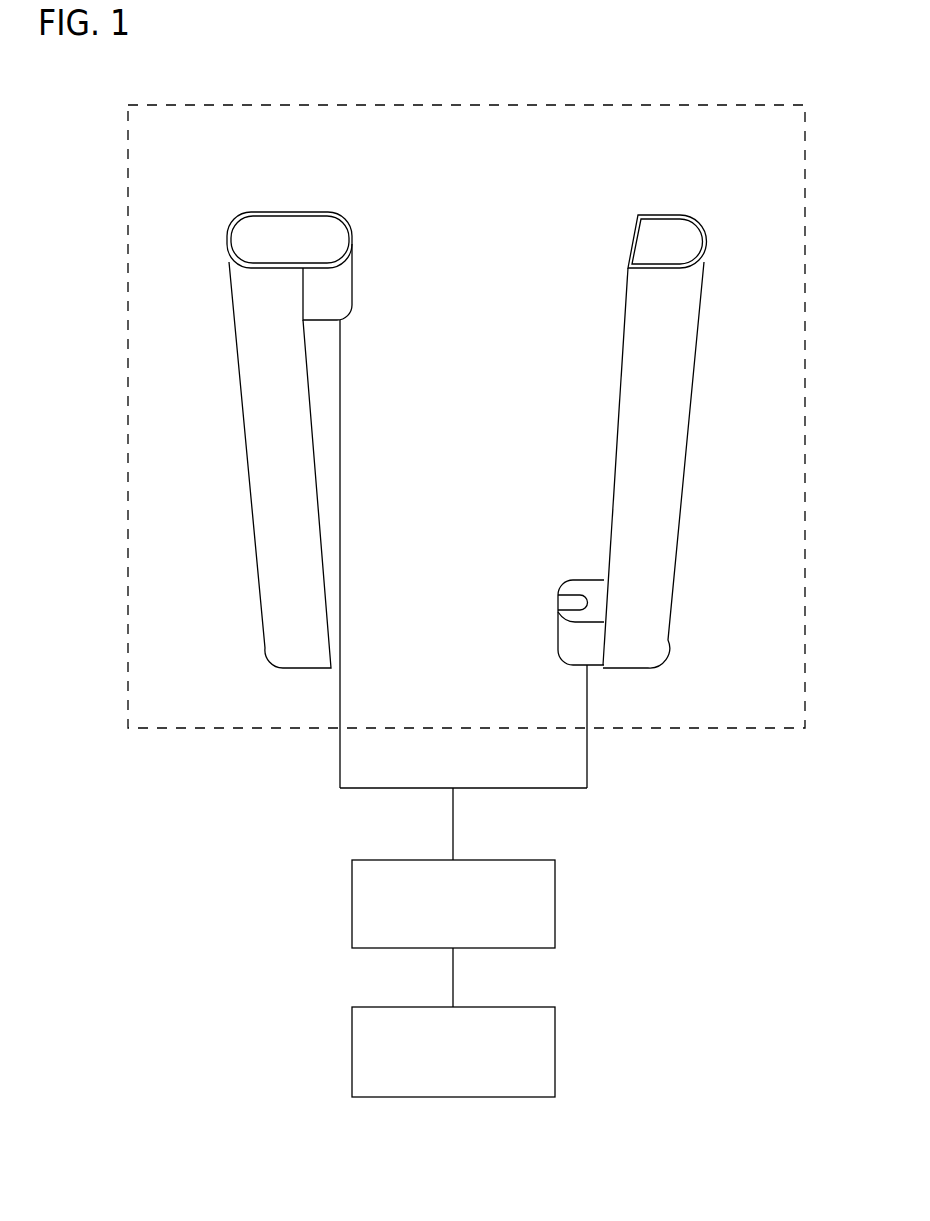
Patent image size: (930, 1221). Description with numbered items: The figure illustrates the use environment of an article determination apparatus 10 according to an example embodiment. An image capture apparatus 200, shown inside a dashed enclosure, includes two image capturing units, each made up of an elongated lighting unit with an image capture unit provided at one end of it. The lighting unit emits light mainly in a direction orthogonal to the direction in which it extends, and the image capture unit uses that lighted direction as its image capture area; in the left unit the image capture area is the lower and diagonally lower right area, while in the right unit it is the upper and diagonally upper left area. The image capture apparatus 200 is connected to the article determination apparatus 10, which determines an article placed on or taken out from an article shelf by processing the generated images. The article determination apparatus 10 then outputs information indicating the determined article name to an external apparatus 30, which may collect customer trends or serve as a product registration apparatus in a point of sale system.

The image capture apparatus 200 is at (593, 105).
The article determination apparatus 10 is at (555, 910).
The external apparatus 30 is at (555, 1056).